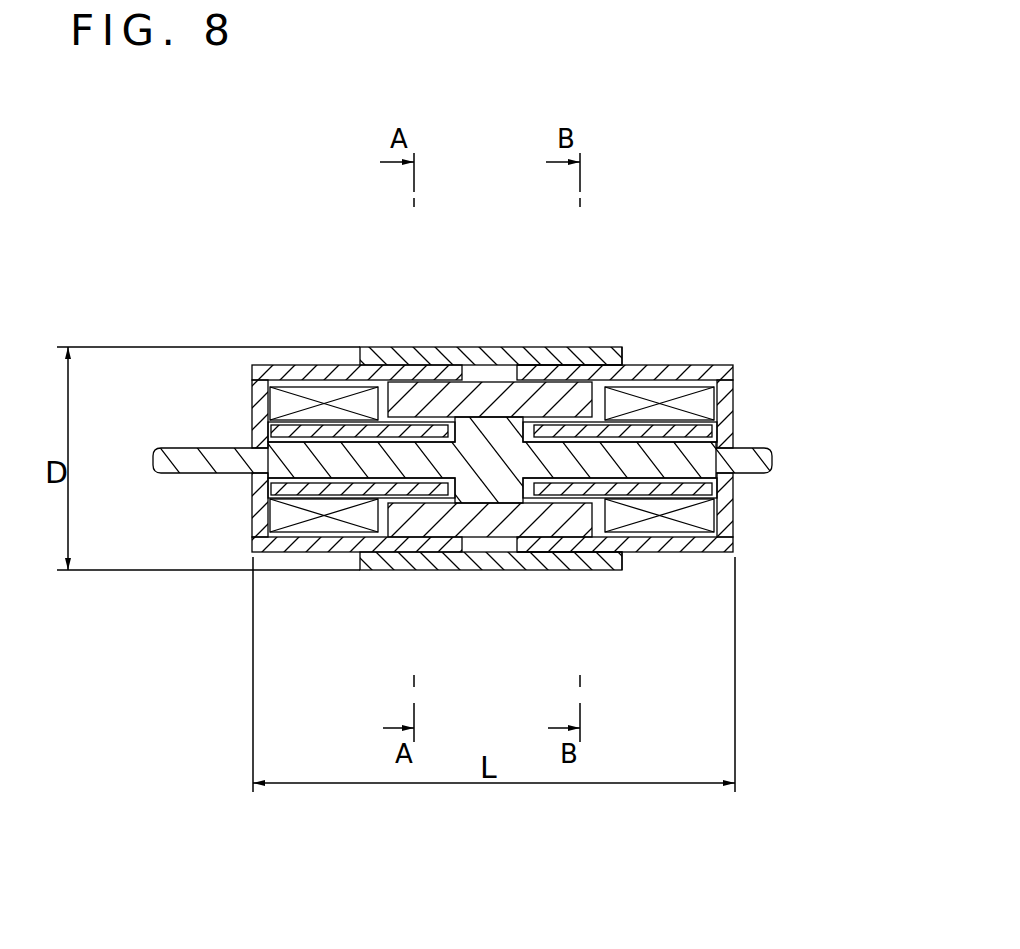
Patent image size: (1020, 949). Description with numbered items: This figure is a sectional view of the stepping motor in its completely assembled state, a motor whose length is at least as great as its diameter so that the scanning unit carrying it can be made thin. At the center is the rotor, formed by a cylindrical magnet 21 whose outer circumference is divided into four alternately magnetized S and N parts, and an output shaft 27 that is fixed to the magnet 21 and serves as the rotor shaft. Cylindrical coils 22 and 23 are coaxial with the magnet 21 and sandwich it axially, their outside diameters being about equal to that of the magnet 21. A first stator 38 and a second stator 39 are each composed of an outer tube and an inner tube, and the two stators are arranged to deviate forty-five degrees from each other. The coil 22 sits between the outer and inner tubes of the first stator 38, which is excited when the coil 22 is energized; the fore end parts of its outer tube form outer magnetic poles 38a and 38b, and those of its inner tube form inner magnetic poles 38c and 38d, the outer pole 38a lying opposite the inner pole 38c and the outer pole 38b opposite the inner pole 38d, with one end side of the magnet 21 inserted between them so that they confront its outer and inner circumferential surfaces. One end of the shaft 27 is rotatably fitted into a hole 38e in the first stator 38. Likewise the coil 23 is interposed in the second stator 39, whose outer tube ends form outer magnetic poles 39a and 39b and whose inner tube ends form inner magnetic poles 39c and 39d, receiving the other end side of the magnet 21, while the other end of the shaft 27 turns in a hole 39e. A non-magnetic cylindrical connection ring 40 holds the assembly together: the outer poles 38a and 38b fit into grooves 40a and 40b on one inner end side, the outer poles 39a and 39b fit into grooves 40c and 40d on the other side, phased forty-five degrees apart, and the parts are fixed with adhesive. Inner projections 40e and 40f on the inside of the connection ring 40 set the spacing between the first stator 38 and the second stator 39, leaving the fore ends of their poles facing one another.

The magnet 21 is at (553, 480).
The coil 22 is at (250, 527).
The coil 23 is at (677, 550).
The output shaft 27 is at (449, 525).
The first stator 38 is at (301, 449).
The outer magnetic pole 38a is at (392, 370).
The outer magnetic pole 38b is at (345, 550).
The inner magnetic pole 38c is at (403, 420).
The inner magnetic pole 38d is at (405, 503).
The hole 38e is at (250, 437).
The second stator 39 is at (678, 470).
The outer magnetic pole 39a is at (613, 373).
The outer magnetic pole 39b is at (620, 570).
The inner magnetic pole 39c is at (557, 422).
The inner magnetic pole 39d is at (553, 522).
The hole 39e is at (732, 442).
The connection ring 40 is at (503, 446).
The groove 40a is at (420, 373).
The groove 40b is at (442, 570).
The groove 40c is at (570, 367).
The groove 40d is at (598, 570).
The inner projection 40e is at (470, 365).
The inner projection 40f is at (490, 570).